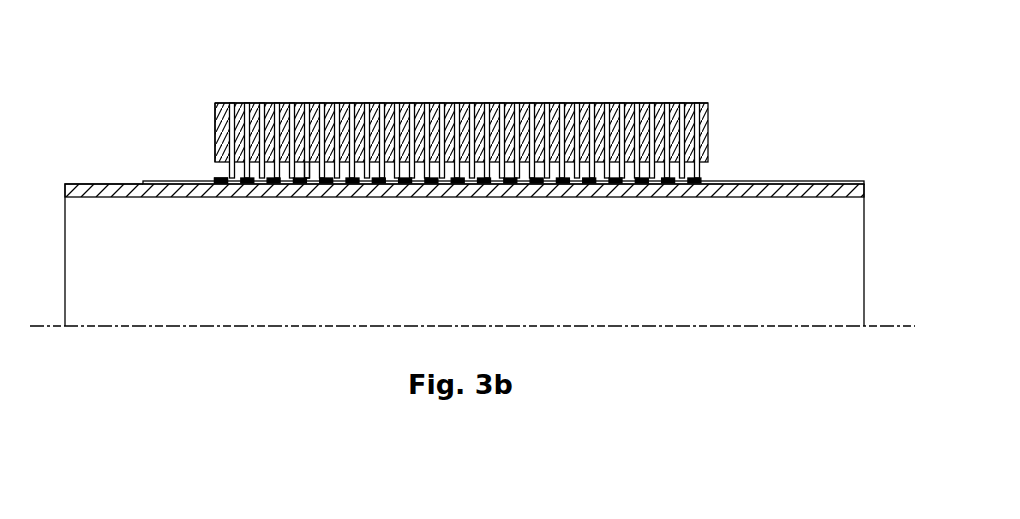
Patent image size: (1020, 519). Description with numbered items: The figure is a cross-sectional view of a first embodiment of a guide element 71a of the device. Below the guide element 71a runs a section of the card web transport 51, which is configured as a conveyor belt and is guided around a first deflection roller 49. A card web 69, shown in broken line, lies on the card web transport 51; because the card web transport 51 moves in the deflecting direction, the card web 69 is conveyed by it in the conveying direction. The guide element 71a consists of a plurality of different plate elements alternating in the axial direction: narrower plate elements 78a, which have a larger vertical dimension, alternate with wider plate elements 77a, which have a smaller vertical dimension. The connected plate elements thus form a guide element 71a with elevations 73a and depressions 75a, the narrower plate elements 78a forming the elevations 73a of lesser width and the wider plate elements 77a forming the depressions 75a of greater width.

The first deflection roller 49 is at (824, 185).
The card web transport 51 is at (737, 183).
The card web 69 is at (218, 180).
The guide element 71a is at (430, 103).
The elevations 73a is at (275, 183).
The depressions 75a is at (303, 178).
The wider plate elements 77a is at (228, 104).
The narrower plate elements 78a is at (215, 101).